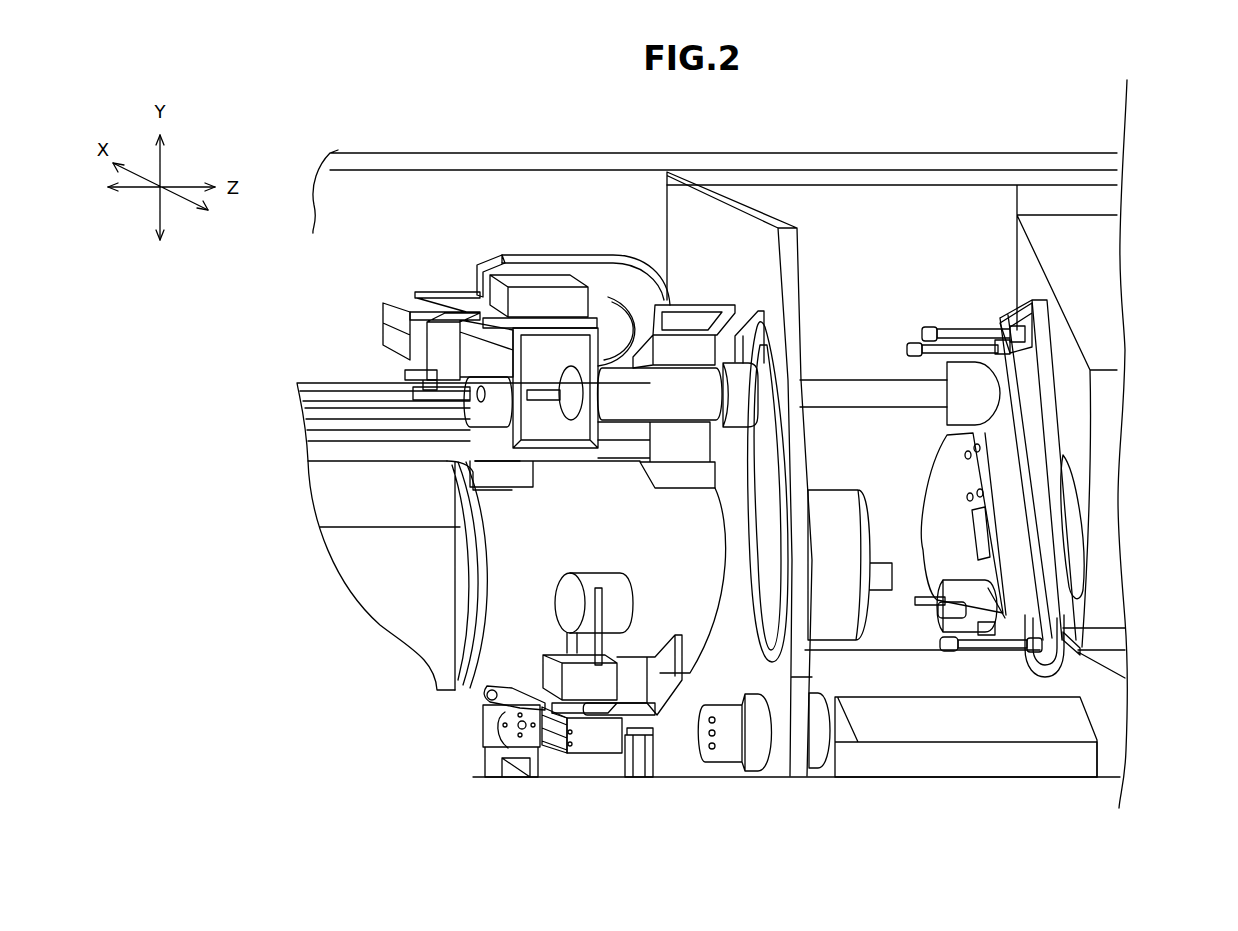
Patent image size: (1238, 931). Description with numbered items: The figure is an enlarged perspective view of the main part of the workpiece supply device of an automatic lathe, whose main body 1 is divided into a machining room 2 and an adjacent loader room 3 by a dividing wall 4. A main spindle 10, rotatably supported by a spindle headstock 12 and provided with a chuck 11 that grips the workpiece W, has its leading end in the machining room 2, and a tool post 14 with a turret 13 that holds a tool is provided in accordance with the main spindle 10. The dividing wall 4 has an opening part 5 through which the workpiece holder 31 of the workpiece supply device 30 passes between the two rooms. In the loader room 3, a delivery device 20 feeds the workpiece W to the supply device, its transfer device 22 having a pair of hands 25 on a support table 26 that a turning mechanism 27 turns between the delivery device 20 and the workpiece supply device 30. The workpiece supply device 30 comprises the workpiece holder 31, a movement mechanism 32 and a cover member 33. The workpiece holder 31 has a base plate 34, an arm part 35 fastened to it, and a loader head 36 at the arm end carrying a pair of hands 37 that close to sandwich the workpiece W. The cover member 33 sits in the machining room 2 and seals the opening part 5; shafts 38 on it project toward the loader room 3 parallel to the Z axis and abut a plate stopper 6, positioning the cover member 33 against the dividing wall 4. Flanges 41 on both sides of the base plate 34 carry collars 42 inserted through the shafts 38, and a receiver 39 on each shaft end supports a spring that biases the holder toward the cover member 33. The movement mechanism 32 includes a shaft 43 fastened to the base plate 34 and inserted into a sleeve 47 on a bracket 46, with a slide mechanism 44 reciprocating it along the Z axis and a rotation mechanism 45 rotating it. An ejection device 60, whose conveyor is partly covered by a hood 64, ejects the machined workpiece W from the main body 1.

The main body 1 is at (1043, 152).
The machining room 2 is at (925, 224).
The loader room 3 is at (592, 207).
The dividing wall 4 is at (752, 202).
The opening part 5 is at (757, 360).
The plate stopper 6 is at (648, 325).
The main spindle 10 is at (820, 490).
The chuck 11 is at (853, 490).
The spindle headstock 12 is at (500, 560).
The turret 13 is at (936, 493).
The tool post 14 is at (922, 461).
The delivery device 20 is at (538, 765).
The transfer device 22 is at (600, 740).
The hands 25 is at (615, 600).
The support table 26 is at (570, 683).
The turning mechanism 27 is at (617, 755).
The workpiece supply device 30 is at (1021, 663).
The workpiece holder 31 is at (1015, 850).
The movement mechanism 32 is at (813, 403).
The cover member 33 is at (1065, 663).
The base plate 34 is at (1002, 640).
The arm part 35 is at (987, 653).
The loader head 36 is at (967, 637).
The hands 37 is at (937, 604).
The shafts 38 is at (982, 333).
The receiver 39 is at (933, 340).
The flanges 41 is at (1033, 323).
The collar 42 is at (1037, 332).
The shaft 43 is at (877, 397).
The slide mechanism 44 is at (322, 383).
The rotation mechanism 45 is at (415, 325).
The bracket 46 is at (390, 310).
The sleeve 47 is at (693, 387).
The ejection device 60 is at (1098, 758).
The hood 64 is at (1073, 768).
The workpiece W is at (593, 582).